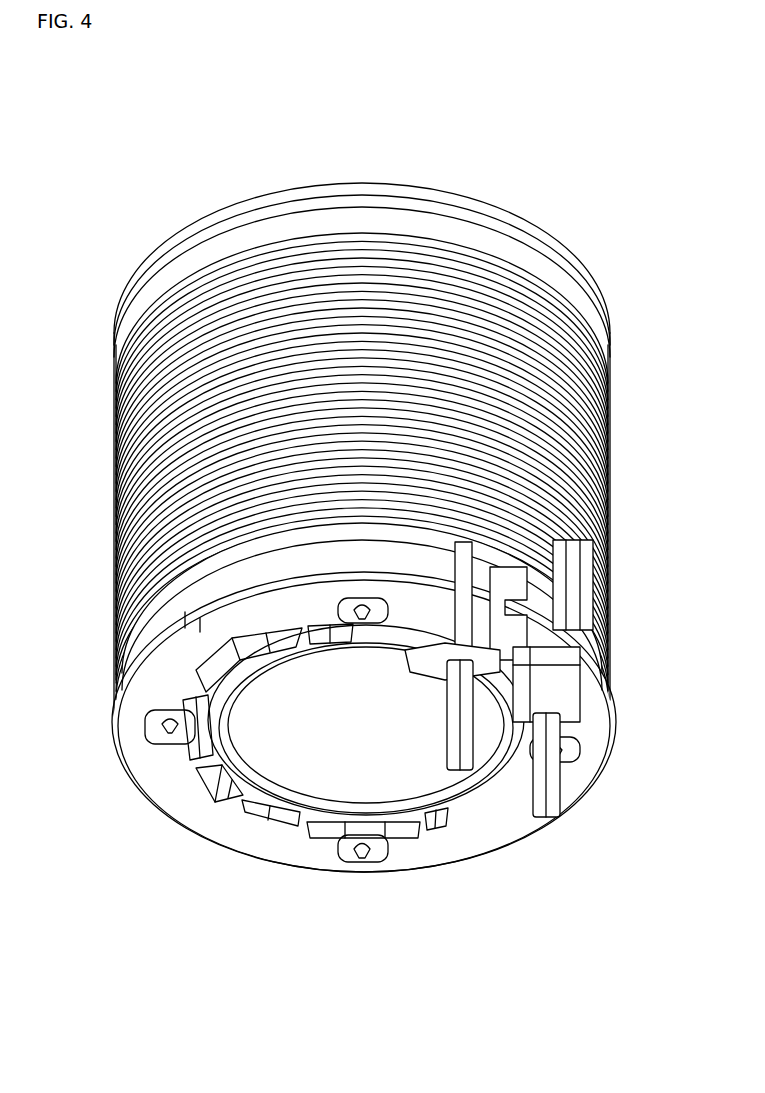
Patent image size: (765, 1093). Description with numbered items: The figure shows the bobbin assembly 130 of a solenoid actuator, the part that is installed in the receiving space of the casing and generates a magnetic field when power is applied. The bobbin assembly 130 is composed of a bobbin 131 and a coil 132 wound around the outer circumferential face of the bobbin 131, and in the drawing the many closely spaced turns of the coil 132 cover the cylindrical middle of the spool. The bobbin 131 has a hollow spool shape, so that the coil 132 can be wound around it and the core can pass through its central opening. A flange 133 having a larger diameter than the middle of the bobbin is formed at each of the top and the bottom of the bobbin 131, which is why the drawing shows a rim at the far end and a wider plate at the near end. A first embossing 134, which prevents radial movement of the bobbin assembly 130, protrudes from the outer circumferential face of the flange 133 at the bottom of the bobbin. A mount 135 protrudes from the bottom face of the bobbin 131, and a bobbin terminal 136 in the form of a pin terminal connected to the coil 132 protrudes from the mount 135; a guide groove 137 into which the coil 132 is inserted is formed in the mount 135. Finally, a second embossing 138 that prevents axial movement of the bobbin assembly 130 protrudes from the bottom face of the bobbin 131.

The bobbin assembly 130 is at (576, 172).
The bobbin 131 is at (437, 849).
The coil 132 is at (611, 497).
The flange 133 is at (609, 303).
The first embossing 134 is at (183, 613).
The mount 135 is at (557, 673).
The bobbin terminal 136 is at (460, 733).
The guide groove 137 is at (397, 643).
The second embossing 138 is at (363, 860).